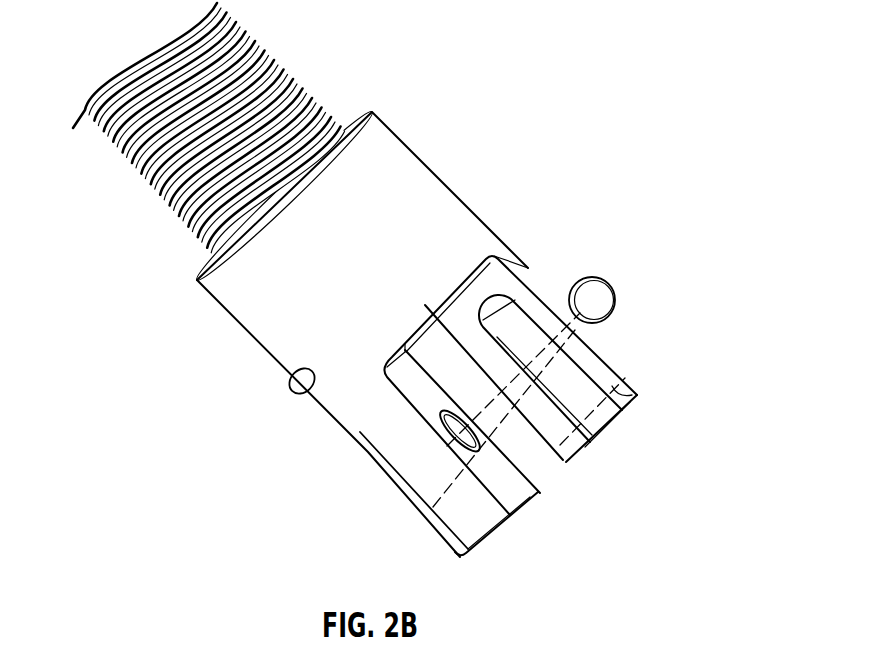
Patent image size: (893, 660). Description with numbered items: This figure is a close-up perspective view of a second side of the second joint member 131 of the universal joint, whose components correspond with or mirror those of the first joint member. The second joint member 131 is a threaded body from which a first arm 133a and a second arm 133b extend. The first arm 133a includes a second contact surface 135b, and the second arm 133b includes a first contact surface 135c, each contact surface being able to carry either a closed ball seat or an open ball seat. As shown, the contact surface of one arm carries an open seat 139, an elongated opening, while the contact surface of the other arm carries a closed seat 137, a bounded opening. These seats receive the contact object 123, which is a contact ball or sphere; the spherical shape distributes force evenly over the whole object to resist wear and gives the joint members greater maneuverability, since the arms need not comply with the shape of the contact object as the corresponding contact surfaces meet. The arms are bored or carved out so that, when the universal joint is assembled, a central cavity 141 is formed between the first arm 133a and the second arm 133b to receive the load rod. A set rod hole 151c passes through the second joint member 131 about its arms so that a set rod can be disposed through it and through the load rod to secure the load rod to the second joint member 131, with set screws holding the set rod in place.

The second joint member 131 is at (398, 162).
The first arm 133a is at (513, 265).
The second arm 133b is at (322, 400).
The second contact surface 135b is at (636, 397).
The first contact surface 135c is at (537, 500).
The closed seat 137 is at (448, 410).
The open seat 139 is at (600, 392).
The central cavity 141 is at (556, 479).
The set rod hole 151c is at (298, 381).
The contact object 123 is at (583, 310).